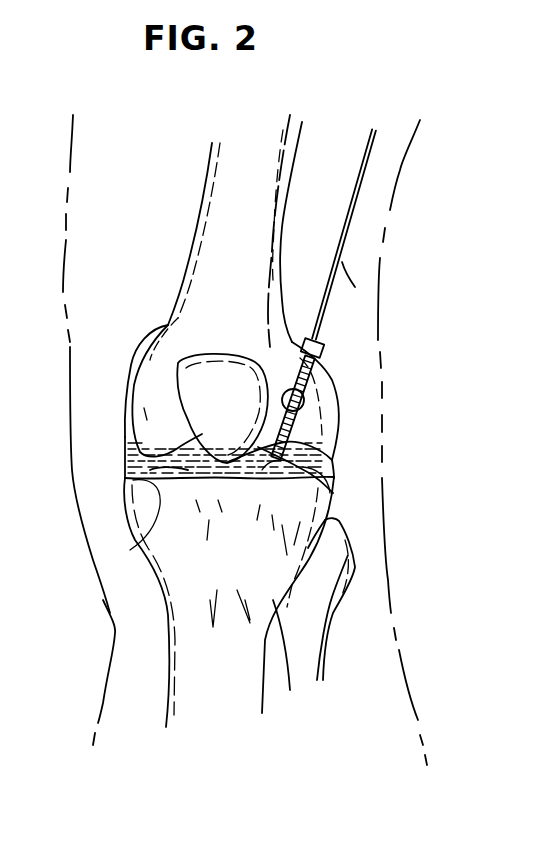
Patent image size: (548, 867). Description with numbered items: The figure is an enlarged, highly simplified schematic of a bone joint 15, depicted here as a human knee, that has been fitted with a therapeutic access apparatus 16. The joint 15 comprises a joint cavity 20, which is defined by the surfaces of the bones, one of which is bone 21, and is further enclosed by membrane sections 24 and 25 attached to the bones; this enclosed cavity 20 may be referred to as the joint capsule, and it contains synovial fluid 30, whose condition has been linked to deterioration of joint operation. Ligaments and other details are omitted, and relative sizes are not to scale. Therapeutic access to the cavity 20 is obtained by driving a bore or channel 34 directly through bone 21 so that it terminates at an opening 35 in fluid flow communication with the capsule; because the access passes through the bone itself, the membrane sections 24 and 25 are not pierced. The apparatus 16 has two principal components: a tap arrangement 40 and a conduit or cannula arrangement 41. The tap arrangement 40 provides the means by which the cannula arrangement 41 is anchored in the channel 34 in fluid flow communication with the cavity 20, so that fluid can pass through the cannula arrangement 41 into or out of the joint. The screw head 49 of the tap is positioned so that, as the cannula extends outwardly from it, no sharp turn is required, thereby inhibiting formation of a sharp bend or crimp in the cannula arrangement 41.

The bone joint 15 is at (106, 485).
The apparatus 16 is at (360, 210).
The joint cavity 20 is at (250, 478).
The bone 21 is at (195, 247).
The membrane section 24 is at (123, 460).
The membrane section 25 is at (327, 460).
The synovial fluid 30 is at (163, 470).
The channel 34 is at (305, 383).
The opening 35 is at (314, 482).
The tap arrangement 40 is at (273, 352).
The cannula arrangement 41 is at (348, 287).
The screw head 49 is at (323, 349).